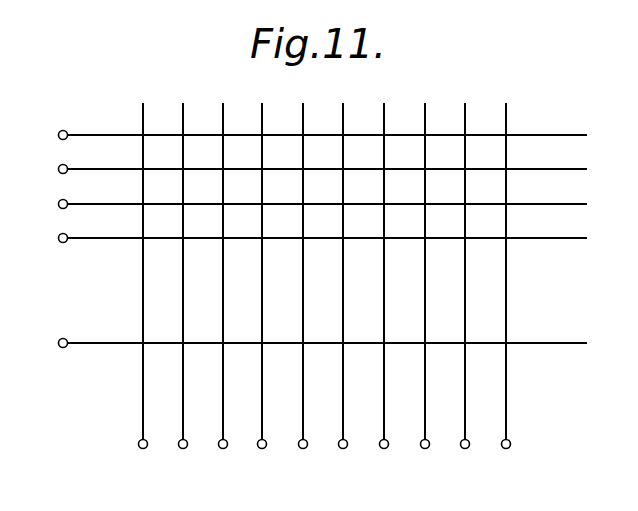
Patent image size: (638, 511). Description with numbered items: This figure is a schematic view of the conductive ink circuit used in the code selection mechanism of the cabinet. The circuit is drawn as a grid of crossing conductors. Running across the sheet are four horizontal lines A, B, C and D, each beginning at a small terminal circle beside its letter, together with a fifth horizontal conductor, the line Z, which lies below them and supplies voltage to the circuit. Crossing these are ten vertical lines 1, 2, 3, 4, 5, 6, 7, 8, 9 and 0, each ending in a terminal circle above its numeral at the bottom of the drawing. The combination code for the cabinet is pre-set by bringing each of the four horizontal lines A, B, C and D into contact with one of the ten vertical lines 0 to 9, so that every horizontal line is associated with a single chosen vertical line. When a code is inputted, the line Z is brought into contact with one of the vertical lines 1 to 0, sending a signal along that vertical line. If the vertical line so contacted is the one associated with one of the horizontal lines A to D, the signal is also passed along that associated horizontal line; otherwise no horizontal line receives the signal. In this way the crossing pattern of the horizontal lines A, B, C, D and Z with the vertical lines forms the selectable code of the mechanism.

The horizontal line A is at (315, 135).
The horizontal line B is at (315, 169).
The horizontal line C is at (315, 204).
The horizontal line D is at (315, 238).
The line Z is at (315, 343).
The vertical line 1 is at (143, 290).
The vertical line 2 is at (183, 290).
The vertical line 3 is at (223, 290).
The vertical line 4 is at (262, 290).
The vertical line 5 is at (303, 290).
The vertical line 6 is at (343, 290).
The vertical line 7 is at (384, 290).
The vertical line 8 is at (425, 290).
The vertical line 9 is at (465, 290).
The vertical line 0 is at (506, 290).